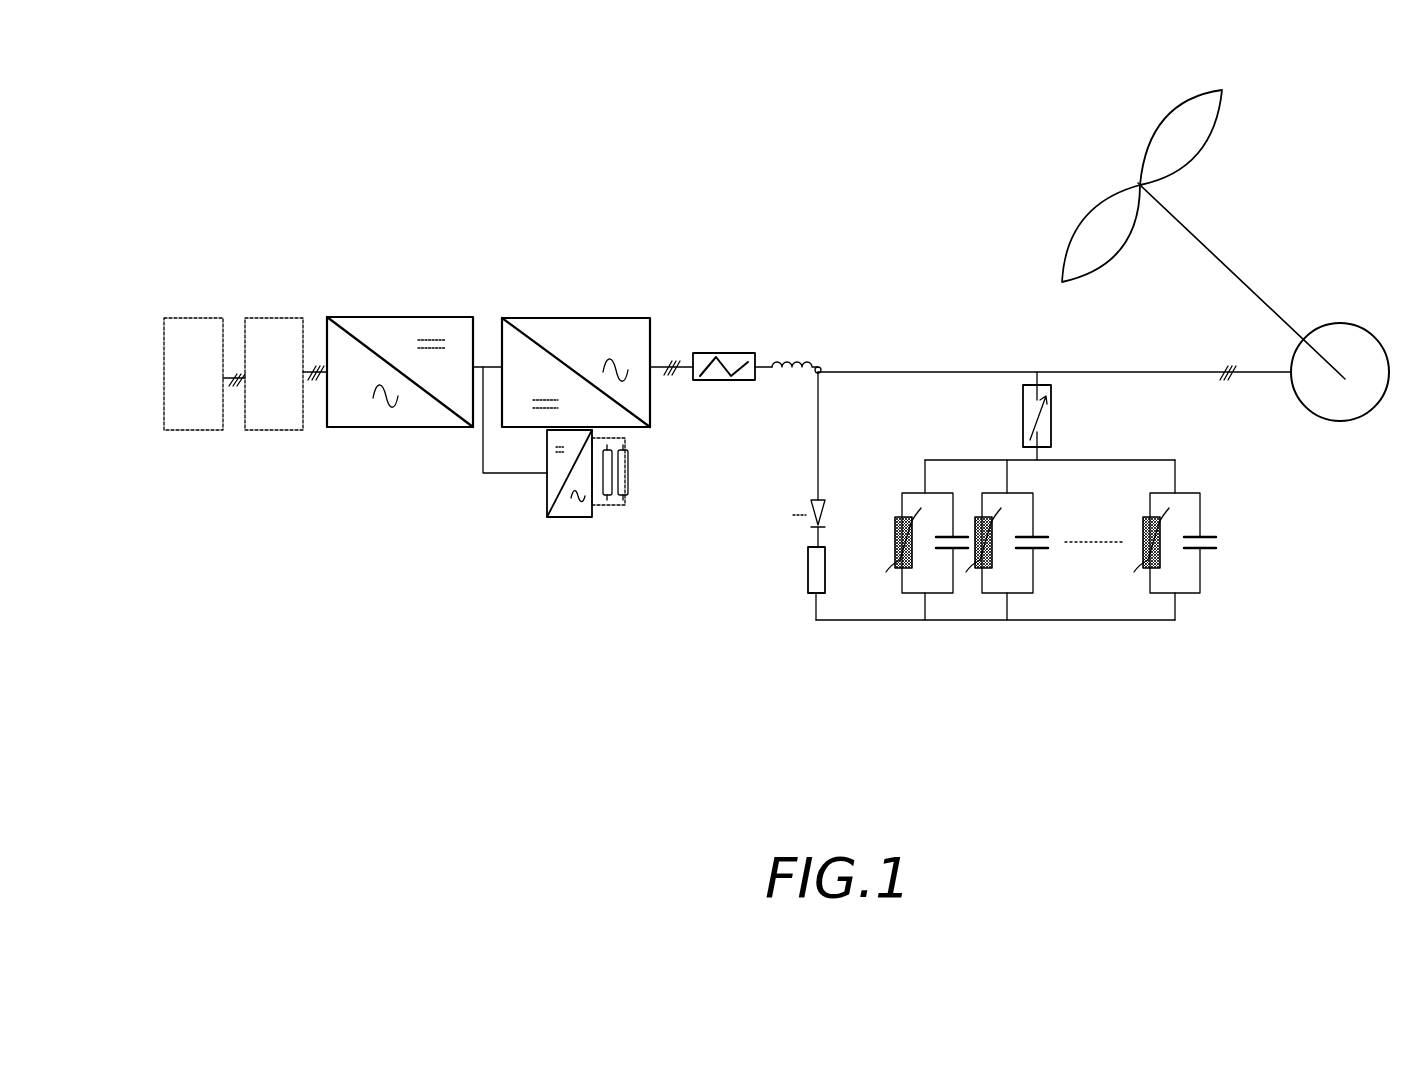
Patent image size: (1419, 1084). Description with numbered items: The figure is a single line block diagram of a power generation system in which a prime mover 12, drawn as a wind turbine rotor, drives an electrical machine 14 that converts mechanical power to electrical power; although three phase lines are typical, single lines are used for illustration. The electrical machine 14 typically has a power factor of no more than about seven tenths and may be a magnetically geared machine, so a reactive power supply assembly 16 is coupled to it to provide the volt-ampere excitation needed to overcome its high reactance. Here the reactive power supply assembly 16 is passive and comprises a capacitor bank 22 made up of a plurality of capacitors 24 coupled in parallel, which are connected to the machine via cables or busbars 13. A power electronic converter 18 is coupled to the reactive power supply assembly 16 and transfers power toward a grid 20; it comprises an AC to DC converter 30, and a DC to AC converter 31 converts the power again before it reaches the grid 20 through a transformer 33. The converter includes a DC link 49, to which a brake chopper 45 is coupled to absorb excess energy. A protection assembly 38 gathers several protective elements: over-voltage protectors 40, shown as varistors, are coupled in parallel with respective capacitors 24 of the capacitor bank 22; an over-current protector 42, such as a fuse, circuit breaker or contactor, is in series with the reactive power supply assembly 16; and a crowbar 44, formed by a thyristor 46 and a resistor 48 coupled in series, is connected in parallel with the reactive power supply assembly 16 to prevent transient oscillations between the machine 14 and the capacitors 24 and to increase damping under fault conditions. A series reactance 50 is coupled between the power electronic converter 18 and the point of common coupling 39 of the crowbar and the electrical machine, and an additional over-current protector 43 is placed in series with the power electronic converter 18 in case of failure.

The prime mover 12 is at (1240, 205).
The cables or busbars 13 is at (1160, 370).
The electrical machine 14 is at (1338, 346).
The reactive power supply assembly 16 is at (1068, 590).
The power electronic converter 18 is at (488, 445).
The grid 20 is at (196, 422).
The capacitor bank 22 is at (1146, 598).
The capacitors 24 is at (1205, 549).
The AC to DC converter 30 is at (568, 322).
The DC to AC converter 31 is at (384, 328).
The transformer 33 is at (280, 332).
The protection assembly 38 is at (802, 336).
The point of common coupling 39 is at (855, 338).
The over-voltage protectors 40 is at (1142, 520).
The over-current protector 42 is at (1052, 427).
The additional over-current protector 43 is at (704, 381).
The crowbar 44 is at (783, 496).
The brake chopper 45 is at (565, 536).
The thyristor 46 is at (816, 512).
The resistor 48 is at (846, 562).
The DC link 49 is at (486, 366).
The series reactance 50 is at (794, 378).